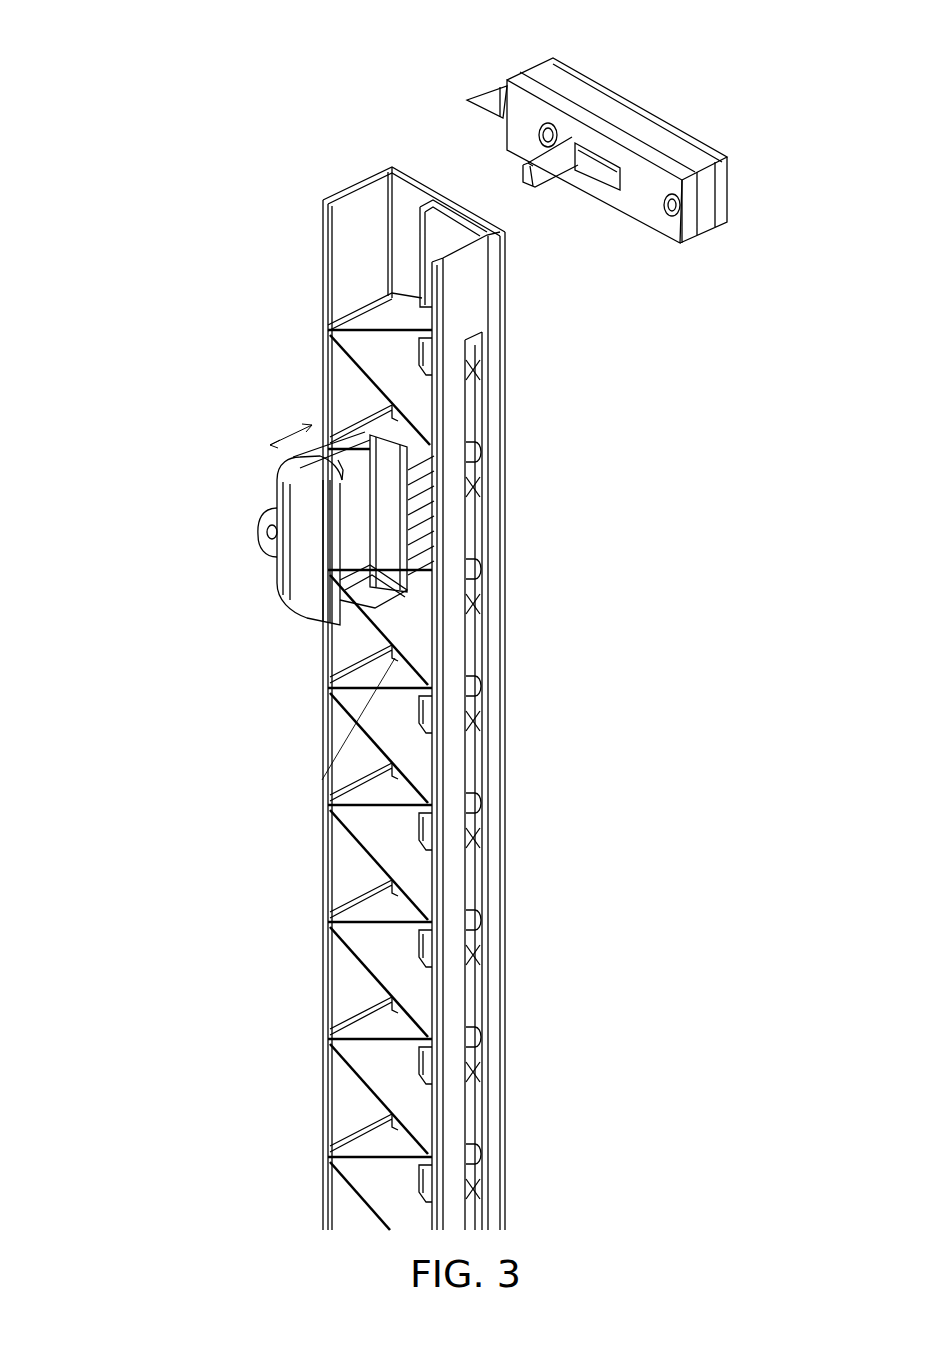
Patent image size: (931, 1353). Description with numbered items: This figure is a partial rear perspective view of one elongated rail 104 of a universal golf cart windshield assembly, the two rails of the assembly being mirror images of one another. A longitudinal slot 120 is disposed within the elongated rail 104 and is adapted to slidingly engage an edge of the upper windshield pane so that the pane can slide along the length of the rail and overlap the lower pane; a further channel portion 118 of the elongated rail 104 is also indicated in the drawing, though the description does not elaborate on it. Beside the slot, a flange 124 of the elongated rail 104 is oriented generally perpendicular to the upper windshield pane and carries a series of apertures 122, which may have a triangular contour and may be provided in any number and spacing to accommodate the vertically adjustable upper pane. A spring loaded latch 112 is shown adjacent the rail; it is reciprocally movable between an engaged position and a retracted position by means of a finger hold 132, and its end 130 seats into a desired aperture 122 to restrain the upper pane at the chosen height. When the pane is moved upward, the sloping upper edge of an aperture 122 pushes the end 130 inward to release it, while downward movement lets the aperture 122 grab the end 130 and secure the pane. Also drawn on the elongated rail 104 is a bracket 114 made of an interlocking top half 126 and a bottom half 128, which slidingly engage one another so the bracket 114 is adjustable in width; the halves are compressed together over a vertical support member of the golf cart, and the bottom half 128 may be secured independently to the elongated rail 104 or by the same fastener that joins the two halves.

The elongated rail 104 is at (340, 248).
The spring loaded latch 112 is at (707, 235).
The bracket 114 is at (278, 585).
The first channel 118 is at (352, 206).
The longitudinal slot 120 is at (466, 204).
The aperture 122 is at (470, 353).
The flange 124 is at (485, 320).
The interlocking top half 126 is at (287, 462).
The bottom half 128 is at (350, 553).
The end of spring loaded latch 130 is at (473, 82).
The finger hold 132 is at (548, 182).